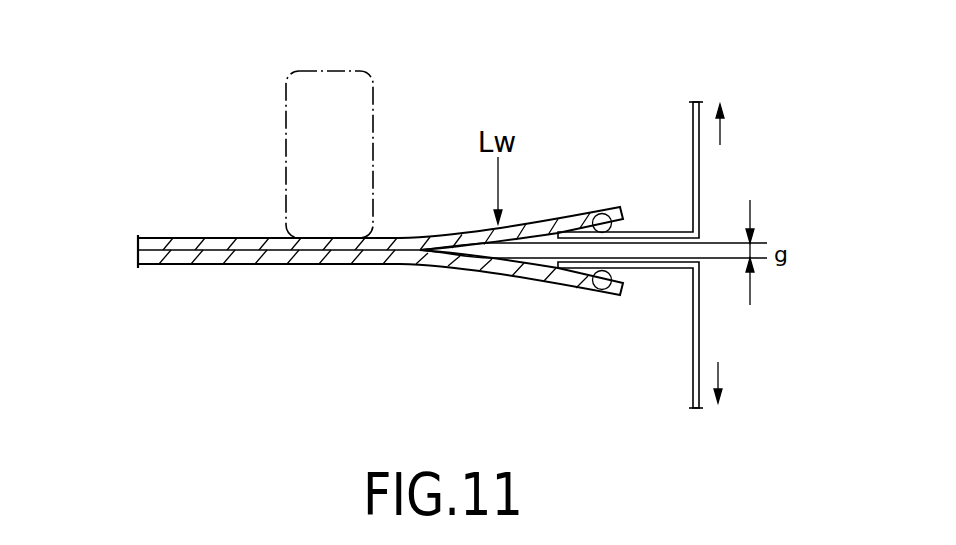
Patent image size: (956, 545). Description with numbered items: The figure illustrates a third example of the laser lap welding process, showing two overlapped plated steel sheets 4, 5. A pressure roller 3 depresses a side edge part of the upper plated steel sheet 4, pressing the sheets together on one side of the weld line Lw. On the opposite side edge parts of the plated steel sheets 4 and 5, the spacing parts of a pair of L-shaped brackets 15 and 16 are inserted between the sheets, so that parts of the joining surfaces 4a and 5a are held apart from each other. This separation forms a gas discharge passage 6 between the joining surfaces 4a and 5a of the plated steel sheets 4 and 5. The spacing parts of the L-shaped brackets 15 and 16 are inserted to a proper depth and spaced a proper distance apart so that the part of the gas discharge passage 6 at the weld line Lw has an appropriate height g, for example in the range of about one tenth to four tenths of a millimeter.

The pressure roller 3 is at (323, 70).
The plated steel sheet 4 is at (184, 250).
The plated steel sheet 5 is at (183, 265).
The joining surface 4a is at (589, 215).
The joining surface 5a is at (587, 290).
The gas discharge passage 6 is at (477, 266).
The L-shaped bracket 15 is at (700, 160).
The L-shaped bracket 16 is at (693, 378).